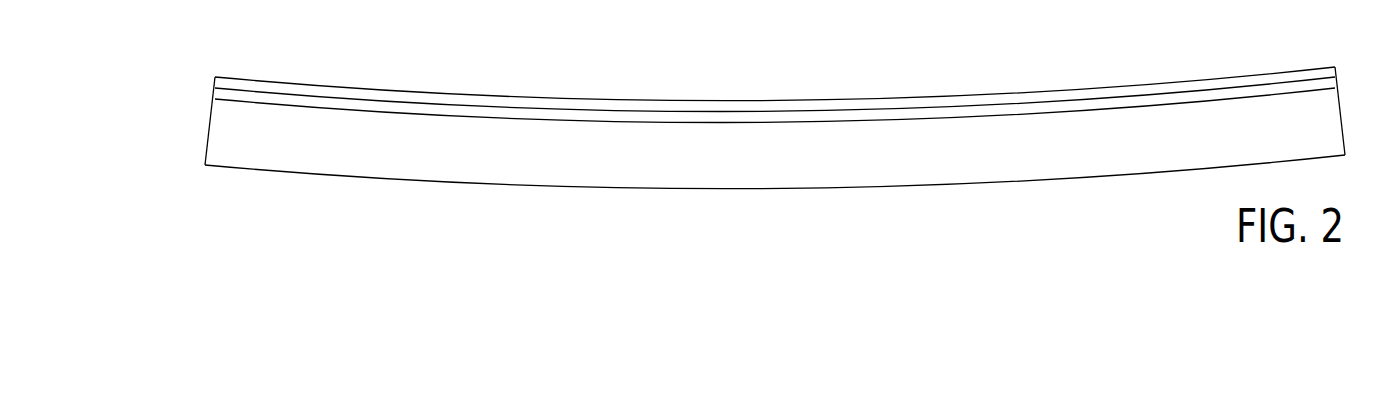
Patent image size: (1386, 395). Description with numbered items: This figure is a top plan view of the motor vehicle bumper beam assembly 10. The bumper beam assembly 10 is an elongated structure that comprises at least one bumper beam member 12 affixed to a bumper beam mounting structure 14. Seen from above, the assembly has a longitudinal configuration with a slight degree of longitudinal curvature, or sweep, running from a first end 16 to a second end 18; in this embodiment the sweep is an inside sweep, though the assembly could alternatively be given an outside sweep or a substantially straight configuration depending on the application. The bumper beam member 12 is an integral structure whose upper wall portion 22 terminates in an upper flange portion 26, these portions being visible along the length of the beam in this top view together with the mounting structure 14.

The bumper beam assembly 10 is at (772, 139).
The bumper beam member 12 is at (638, 198).
The bumper beam mounting structure 14 is at (1268, 78).
The first end 16 is at (1353, 92).
The second end 18 is at (192, 113).
The upper wall portion 22 is at (775, 169).
The upper flange portion 26 is at (1208, 95).